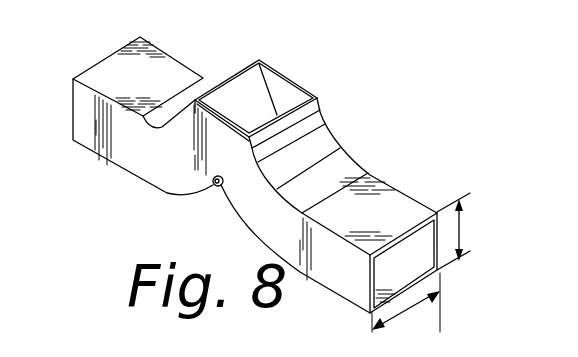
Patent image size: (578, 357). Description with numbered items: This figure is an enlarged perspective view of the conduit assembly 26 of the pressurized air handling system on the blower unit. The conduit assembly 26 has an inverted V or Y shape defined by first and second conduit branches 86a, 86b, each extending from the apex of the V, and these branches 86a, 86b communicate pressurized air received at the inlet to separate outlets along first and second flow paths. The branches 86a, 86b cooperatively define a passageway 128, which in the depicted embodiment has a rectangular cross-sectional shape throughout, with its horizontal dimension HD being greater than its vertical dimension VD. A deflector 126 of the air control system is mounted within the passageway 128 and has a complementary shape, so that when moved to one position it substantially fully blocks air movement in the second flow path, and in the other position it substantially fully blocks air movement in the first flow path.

The conduit assembly 26 is at (378, 133).
The first conduit branch 86a is at (104, 158).
The second conduit branch 86b is at (331, 290).
The deflector 126 is at (253, 98).
The passageway 128 is at (398, 262).
The vertical dimension VD is at (460, 230).
The horizontal dimension HD is at (403, 311).